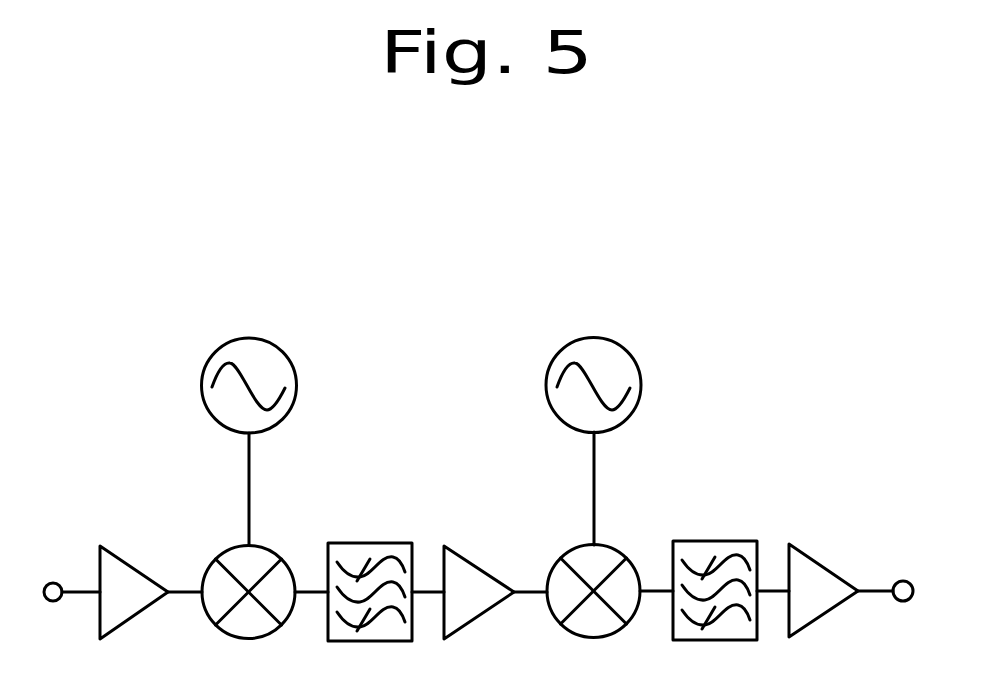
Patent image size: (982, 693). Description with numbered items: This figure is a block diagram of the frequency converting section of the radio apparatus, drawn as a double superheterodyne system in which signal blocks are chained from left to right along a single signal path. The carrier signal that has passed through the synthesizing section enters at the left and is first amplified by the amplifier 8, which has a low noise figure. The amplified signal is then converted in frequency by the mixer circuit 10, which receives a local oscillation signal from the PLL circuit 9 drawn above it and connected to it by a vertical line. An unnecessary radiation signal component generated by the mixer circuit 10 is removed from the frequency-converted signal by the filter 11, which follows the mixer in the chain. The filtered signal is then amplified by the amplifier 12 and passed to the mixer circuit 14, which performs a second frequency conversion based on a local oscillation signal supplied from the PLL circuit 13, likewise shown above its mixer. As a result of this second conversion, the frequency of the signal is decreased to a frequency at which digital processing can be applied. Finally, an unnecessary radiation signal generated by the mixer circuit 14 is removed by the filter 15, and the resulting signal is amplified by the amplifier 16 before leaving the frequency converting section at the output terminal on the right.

The amplifier 8 is at (157, 502).
The PLL circuit 9 is at (277, 348).
The mixer circuit 10 is at (273, 552).
The filter 11 is at (375, 542).
The amplifier 12 is at (512, 500).
The PLL circuit 13 is at (622, 347).
The mixer circuit 14 is at (619, 553).
The filter 15 is at (715, 540).
The amplifier 16 is at (847, 500).